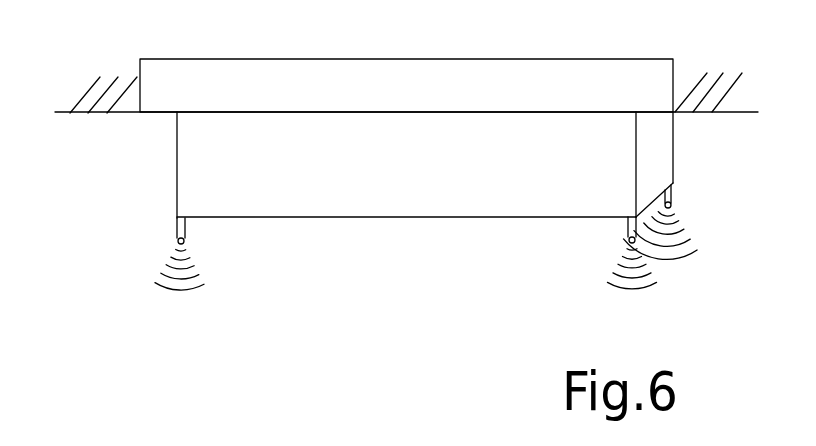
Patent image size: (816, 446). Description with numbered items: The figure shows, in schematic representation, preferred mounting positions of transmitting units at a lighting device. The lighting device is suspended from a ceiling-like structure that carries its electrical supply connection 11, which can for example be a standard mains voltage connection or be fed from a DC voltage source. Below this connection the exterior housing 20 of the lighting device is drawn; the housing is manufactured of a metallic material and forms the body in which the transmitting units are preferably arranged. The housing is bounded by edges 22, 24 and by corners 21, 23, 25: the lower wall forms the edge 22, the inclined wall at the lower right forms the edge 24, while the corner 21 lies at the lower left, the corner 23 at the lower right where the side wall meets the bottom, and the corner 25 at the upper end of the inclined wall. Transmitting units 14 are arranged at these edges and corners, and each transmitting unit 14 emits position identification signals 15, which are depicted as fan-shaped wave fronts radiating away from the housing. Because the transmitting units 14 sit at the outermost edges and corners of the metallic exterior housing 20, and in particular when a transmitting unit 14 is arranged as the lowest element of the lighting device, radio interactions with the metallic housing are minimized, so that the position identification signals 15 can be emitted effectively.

The electrical supply connection 11 is at (655, 135).
The exterior housing 20 is at (433, 110).
The corner 21 is at (177, 218).
The edge 22 is at (390, 217).
The corner 23 is at (636, 216).
The edge 24 is at (647, 204).
The corner 25 is at (673, 183).
The transmitting unit 14 is at (188, 242).
The position identification signal 15 is at (172, 289).